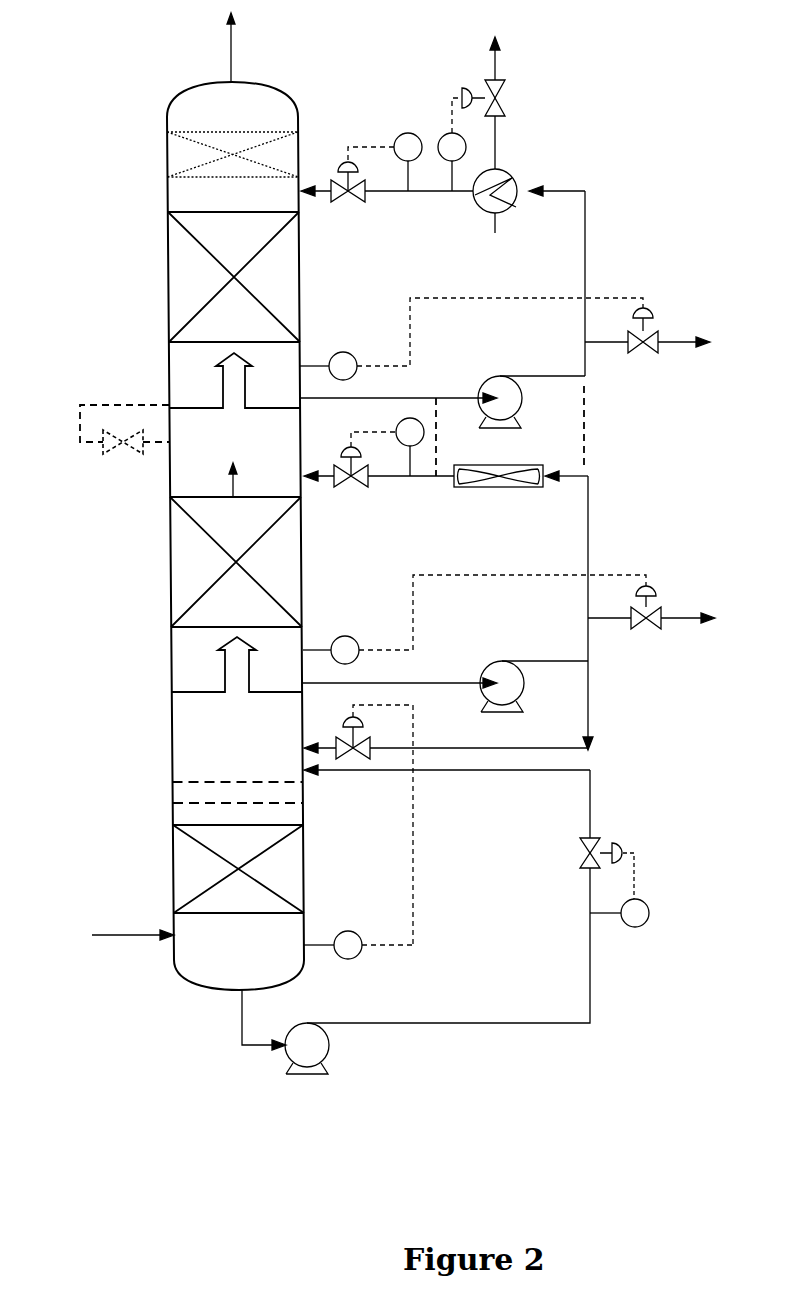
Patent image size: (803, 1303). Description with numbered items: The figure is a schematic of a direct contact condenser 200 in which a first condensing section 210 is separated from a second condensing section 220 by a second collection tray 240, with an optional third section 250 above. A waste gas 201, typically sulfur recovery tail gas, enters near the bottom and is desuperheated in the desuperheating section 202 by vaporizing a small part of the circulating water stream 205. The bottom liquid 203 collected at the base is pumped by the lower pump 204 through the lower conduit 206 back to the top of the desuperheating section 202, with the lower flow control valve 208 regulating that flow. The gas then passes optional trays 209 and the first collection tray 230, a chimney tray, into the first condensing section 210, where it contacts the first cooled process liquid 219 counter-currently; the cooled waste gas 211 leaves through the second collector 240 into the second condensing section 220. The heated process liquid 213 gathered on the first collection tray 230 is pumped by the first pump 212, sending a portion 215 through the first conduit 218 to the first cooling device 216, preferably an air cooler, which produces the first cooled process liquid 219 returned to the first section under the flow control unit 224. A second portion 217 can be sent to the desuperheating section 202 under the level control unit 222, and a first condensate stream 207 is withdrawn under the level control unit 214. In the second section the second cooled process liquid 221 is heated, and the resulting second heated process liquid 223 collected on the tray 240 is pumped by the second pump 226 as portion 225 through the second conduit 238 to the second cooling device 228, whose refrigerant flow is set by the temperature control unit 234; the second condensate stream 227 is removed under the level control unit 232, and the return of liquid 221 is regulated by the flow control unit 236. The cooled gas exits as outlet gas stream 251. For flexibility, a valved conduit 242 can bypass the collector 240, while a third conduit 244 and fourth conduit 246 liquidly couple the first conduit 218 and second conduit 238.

The direct contact condenser 200 is at (173, 98).
The outlet gas stream 251 is at (252, 47).
The third section 250 is at (150, 132).
The second condensing section 220 is at (150, 212).
The second collection tray 240 is at (150, 395).
The conduit 242 is at (101, 432).
The cooled waste gas 211 is at (212, 480).
The first condensing section 210 is at (152, 497).
The first collection tray 230 is at (152, 640).
The optional trays 209 is at (152, 775).
The desuperheating section 202 is at (152, 830).
The waste gas 201 is at (122, 946).
The level control unit 222 is at (358, 933).
The bottom liquid 203 is at (241, 1020).
The lower pump 204 is at (307, 1064).
The lower conduit 206 is at (462, 910).
The lower flow control valve 208 is at (652, 845).
The circulating water stream 205 is at (447, 782).
The second portion 217 is at (469, 710).
The first pump 212 is at (488, 660).
The heated process liquid 213 is at (400, 695).
The level control unit 214 is at (474, 619).
The first condensate stream 207 is at (658, 607).
The first conduit 218 is at (606, 531).
The portion of heated process liquid 215 is at (566, 492).
The first cooling device 216 is at (500, 483).
The first cooled process liquid 219 is at (318, 497).
The flow control unit 224 is at (379, 449).
The fourth conduit 246 is at (454, 437).
The third conduit 244 is at (602, 427).
The second heated process liquid 223 is at (398, 388).
The second pump 226 is at (490, 376).
The level control unit 232 is at (471, 339).
The second condensate stream 227 is at (653, 330).
The second conduit 238 is at (598, 257).
The portion of second heated process liquid 225 is at (557, 203).
The second cooling device 228 is at (515, 177).
The second cooled process liquid 221 is at (387, 192).
The flow control unit 236 is at (417, 130).
The temperature control unit 234 is at (434, 74).